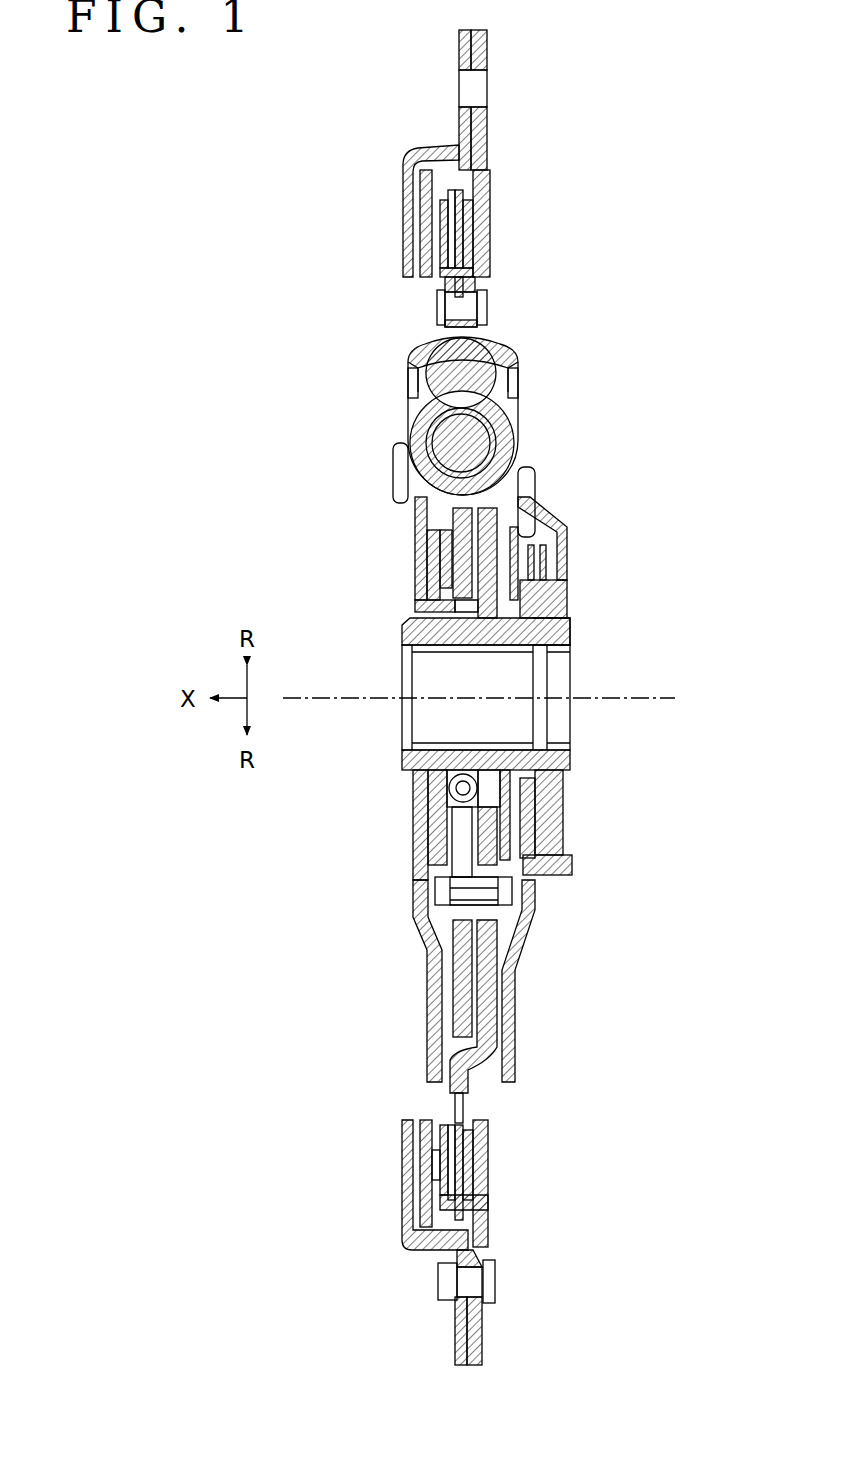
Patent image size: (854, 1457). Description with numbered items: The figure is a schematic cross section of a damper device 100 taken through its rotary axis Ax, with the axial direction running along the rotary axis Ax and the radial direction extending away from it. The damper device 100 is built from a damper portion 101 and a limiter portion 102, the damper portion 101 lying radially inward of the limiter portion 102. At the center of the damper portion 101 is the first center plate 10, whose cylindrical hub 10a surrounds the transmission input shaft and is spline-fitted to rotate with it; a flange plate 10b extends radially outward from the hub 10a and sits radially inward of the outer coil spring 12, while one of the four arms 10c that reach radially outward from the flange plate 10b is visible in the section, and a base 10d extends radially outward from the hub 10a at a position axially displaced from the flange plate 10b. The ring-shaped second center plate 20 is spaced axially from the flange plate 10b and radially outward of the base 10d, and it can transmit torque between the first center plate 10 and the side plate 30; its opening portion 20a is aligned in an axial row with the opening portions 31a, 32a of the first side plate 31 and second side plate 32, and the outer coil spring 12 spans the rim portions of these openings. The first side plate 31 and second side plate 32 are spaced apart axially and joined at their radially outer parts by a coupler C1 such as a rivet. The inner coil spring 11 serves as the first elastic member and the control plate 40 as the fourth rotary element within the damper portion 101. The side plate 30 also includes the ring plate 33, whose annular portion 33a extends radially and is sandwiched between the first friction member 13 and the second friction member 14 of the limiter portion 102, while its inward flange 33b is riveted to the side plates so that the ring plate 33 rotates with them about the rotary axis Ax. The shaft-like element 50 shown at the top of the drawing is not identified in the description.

The damper device 100 is at (598, 76).
The damper portion 101 is at (394, 418).
The limiter portion 102 is at (394, 234).
The shaft 50 is at (458, 52).
The first friction member 13 is at (436, 192).
The second friction member 14 is at (480, 190).
The ring plate 33 is at (455, 229).
The annular portion 33a is at (470, 232).
The inward flange 33b is at (472, 286).
The coupler C1 is at (467, 307).
The side plate 30 is at (468, 408).
The opening portion 31a is at (406, 371).
The opening portion 32a is at (520, 368).
The outer coil spring 12 is at (505, 435).
The second center plate 20 is at (450, 520).
The opening portion 20a is at (468, 503).
The control plate 40 is at (512, 522).
The first center plate 10 is at (520, 686).
The hub 10a is at (565, 640).
The flange plate 10b is at (490, 560).
The arm 10c is at (490, 1040).
The base 10d is at (458, 610).
The inner coil spring 11 is at (448, 790).
The first side plate 31 is at (428, 1005).
The second side plate 32 is at (516, 1005).
The rotary axis Ax is at (656, 696).